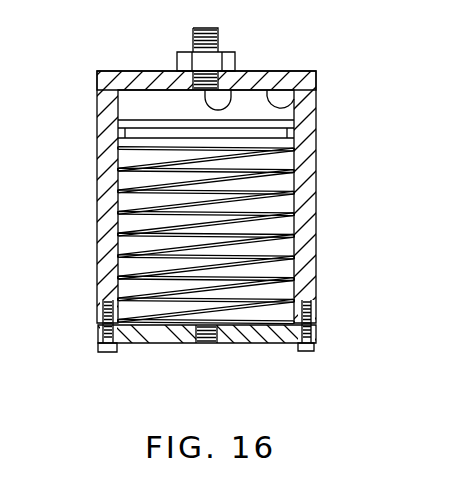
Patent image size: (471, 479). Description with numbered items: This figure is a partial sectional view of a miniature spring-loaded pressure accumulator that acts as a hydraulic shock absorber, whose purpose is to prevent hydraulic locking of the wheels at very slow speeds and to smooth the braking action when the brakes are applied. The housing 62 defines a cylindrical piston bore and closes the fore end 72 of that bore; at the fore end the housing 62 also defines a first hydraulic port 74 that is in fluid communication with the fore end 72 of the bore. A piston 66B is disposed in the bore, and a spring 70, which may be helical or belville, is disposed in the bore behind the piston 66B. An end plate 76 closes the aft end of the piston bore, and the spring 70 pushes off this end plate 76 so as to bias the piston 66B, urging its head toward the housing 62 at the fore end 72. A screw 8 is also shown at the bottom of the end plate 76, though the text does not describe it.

The housing 62 is at (315, 190).
The piston 66B is at (160, 120).
The spring 70 is at (292, 232).
The fore end 72 is at (316, 80).
The first hydraulic port 74 is at (248, 72).
The end plate 76 is at (275, 343).
The screw 8 is at (207, 347).